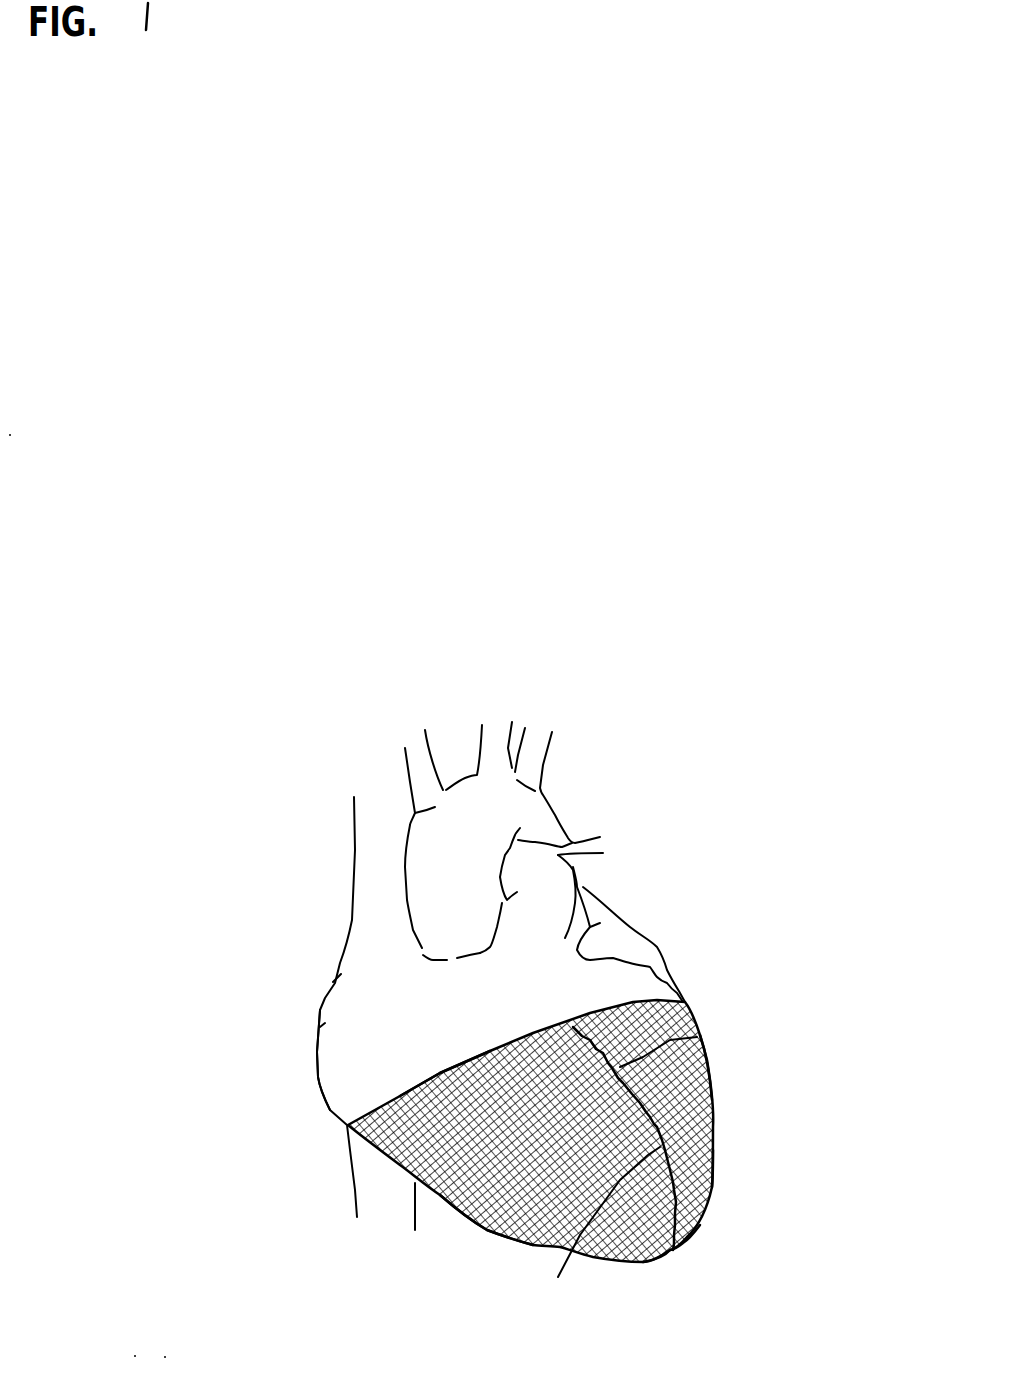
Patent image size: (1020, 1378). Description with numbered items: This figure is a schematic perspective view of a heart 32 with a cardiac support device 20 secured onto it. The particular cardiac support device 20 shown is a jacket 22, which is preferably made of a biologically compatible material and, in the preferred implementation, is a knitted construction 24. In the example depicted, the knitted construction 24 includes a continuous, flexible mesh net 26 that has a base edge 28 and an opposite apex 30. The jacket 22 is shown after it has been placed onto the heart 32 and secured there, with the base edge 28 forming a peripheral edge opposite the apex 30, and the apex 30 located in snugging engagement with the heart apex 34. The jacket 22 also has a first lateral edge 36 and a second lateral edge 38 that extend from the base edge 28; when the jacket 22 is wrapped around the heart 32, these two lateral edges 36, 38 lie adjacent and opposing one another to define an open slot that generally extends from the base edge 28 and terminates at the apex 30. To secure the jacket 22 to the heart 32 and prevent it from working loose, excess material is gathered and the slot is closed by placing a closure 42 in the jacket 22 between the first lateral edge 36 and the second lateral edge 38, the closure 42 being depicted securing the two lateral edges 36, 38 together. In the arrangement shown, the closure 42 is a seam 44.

The cardiac support device 20 is at (800, 872).
The jacket 22 is at (697, 1037).
The knitted construction 24 is at (707, 1083).
The mesh net 26 is at (480, 1230).
The base edge 28 is at (447, 1073).
The apex 30 is at (673, 1247).
The heart 32 is at (317, 1052).
The heart apex 34 is at (662, 1257).
The first lateral edge 36 is at (660, 1123).
The second lateral edge 38 is at (590, 1231).
The closure 42 is at (685, 1007).
The seam 44 is at (670, 1183).